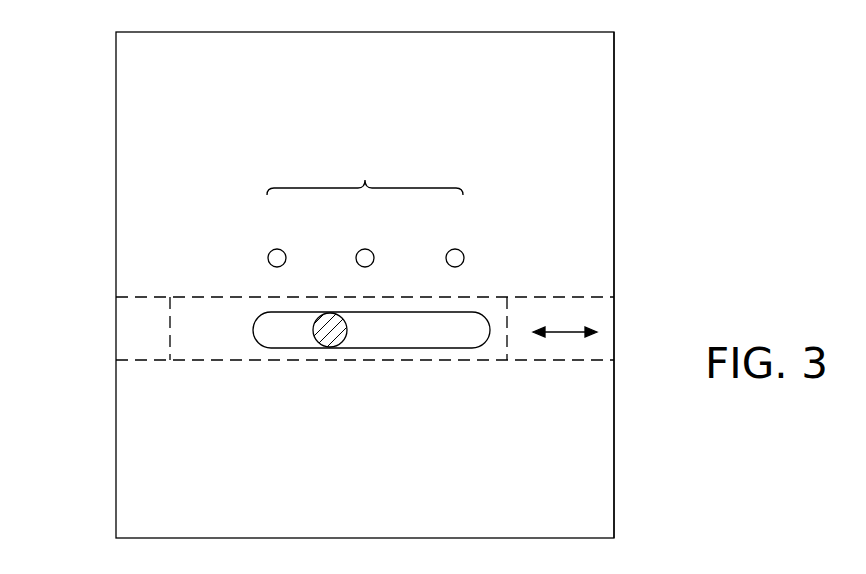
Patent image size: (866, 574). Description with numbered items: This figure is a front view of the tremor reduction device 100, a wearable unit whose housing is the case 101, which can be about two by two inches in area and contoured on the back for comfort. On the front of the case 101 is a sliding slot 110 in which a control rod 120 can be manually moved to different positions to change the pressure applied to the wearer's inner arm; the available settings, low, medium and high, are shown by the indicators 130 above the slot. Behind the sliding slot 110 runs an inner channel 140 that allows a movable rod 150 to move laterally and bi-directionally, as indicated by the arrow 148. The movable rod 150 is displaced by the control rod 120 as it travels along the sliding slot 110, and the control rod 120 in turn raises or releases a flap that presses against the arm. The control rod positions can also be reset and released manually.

The tremor reduction device 100 is at (96, 134).
The case 101 is at (607, 173).
The sliding slot 110 is at (417, 350).
The control rod 120 is at (340, 340).
The indicators 130 is at (365, 207).
The inner channel 140 is at (142, 312).
The arrow 148 is at (565, 333).
The movable rod 150 is at (235, 345).